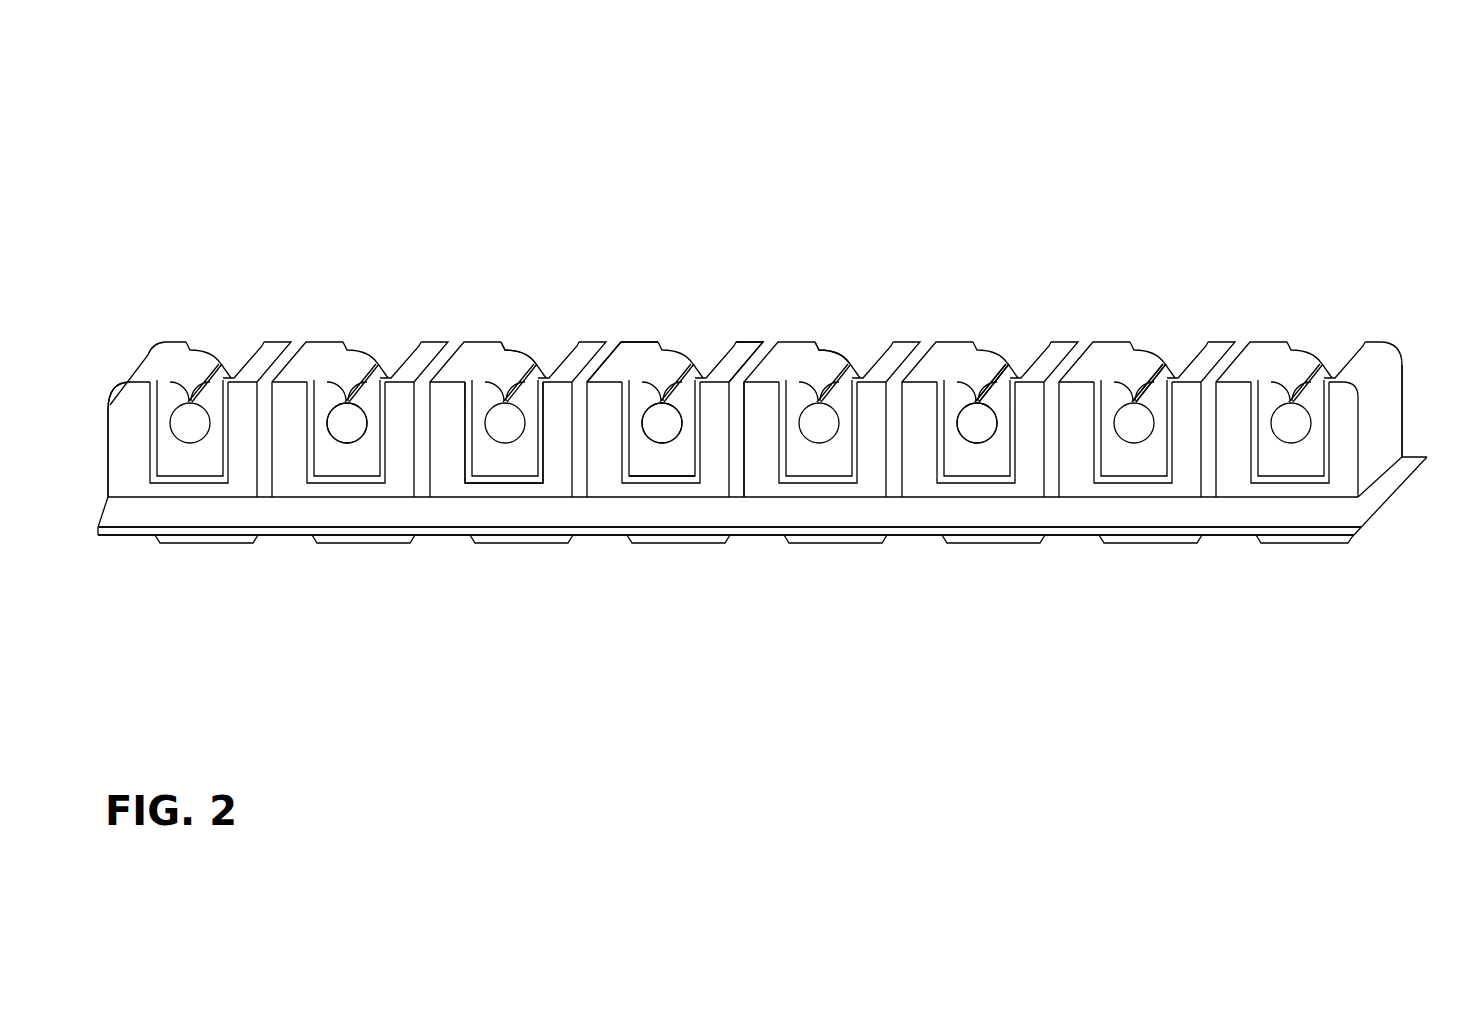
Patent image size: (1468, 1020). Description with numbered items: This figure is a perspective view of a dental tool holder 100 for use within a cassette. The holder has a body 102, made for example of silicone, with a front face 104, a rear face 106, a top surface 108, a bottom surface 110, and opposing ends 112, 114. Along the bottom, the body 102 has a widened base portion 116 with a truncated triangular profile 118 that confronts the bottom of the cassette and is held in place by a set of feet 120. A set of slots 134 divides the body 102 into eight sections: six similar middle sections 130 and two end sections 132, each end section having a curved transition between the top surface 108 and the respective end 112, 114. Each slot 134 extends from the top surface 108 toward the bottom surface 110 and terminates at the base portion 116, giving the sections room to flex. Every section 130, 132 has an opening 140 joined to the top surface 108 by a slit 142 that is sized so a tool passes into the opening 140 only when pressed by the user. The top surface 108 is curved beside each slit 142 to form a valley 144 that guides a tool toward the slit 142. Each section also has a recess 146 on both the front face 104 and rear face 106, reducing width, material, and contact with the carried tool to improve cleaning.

The dental tool holder 100 is at (137, 73).
The body 102 is at (1052, 512).
The front face 104 is at (763, 465).
The rear face 106 is at (760, 350).
The top surface 108 is at (620, 357).
The bottom surface 110 is at (597, 545).
The end 112 is at (108, 447).
The end 114 is at (1384, 503).
The widened base portion 116 is at (1227, 537).
The triangular profile 118 is at (1425, 462).
The feet 120 is at (376, 553).
The section 130 is at (386, 292).
The end section 132 is at (747, 350).
The slot 134 is at (580, 440).
The opening 140 is at (343, 425).
The slit 142 is at (975, 412).
The valley 144 is at (527, 347).
The recess 146 is at (821, 345).